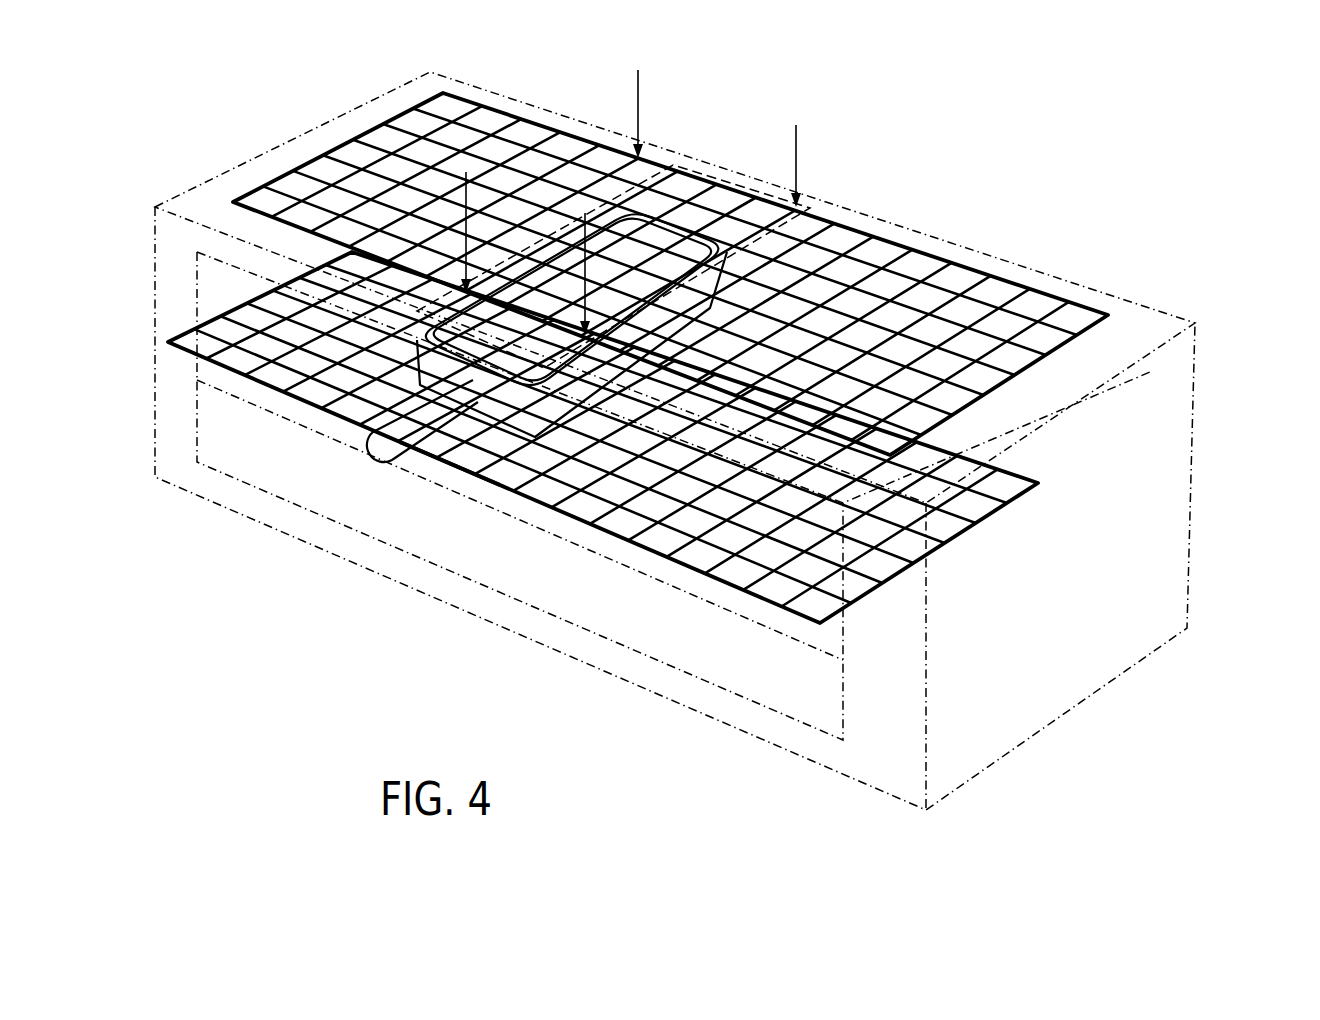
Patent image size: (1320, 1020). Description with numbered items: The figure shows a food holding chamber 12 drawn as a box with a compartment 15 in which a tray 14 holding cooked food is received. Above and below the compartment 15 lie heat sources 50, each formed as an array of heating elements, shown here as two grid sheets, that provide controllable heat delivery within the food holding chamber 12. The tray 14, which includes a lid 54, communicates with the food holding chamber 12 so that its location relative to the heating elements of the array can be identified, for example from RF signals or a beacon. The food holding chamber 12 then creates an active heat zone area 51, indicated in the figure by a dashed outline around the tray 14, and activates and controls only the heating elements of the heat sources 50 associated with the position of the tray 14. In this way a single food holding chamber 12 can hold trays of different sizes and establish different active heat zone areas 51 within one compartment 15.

The food holding chamber 12 is at (1195, 385).
The tray 14 is at (385, 440).
The compartment 15 is at (227, 292).
The heat source 50 is at (930, 253).
The active heat zone area 51 is at (742, 190).
The lid 54 is at (442, 467).